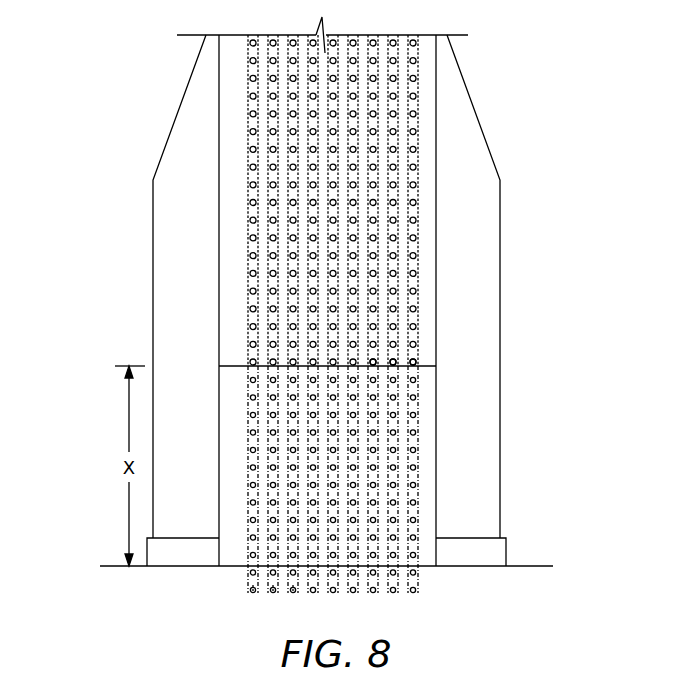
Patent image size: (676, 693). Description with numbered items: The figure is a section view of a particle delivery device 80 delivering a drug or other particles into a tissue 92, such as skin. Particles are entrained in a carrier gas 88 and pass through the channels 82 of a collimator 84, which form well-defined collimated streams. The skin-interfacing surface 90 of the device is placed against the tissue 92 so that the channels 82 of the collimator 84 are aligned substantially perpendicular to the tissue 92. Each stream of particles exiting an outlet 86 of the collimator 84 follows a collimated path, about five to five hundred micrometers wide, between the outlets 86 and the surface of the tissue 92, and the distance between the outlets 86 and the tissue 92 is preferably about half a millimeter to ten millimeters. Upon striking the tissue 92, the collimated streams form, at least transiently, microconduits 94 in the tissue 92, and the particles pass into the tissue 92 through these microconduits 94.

The semiconductor device assembly 80 is at (118, 190).
The channels 82 is at (377, 45).
The collimator 84 is at (234, 142).
The outlet 86 is at (374, 361).
The carrier gas 88 is at (374, 433).
The skin-interfacing surface 90 is at (507, 566).
The tissue 92 is at (525, 566).
The microconduits 94 is at (289, 594).